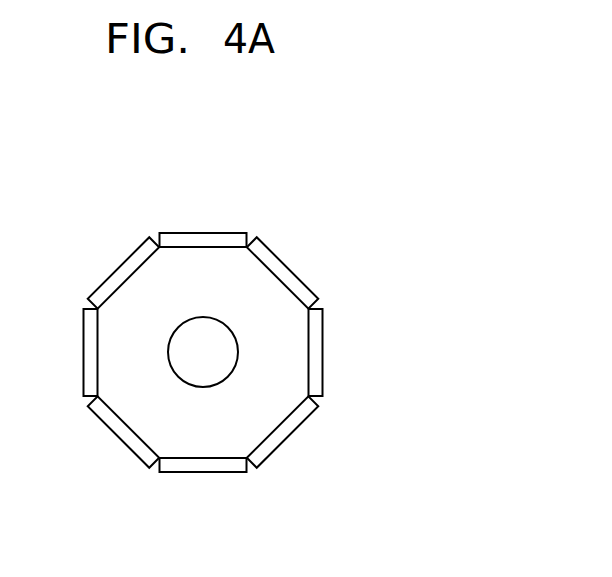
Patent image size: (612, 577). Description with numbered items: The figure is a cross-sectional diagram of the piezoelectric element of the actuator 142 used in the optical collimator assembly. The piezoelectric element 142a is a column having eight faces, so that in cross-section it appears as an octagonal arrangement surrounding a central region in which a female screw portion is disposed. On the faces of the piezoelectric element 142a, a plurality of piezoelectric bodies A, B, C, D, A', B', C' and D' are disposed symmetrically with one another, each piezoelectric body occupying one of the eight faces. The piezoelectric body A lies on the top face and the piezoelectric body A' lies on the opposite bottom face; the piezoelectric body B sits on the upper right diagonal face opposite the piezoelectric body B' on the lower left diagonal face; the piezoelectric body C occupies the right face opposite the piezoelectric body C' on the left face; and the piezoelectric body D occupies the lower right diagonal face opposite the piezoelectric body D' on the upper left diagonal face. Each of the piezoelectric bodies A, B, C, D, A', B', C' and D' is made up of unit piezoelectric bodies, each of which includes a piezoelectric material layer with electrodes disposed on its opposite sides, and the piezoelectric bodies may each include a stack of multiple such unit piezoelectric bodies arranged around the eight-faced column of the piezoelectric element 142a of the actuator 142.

The actuator 142 is at (201, 316).
The piezoelectric element 142a is at (237, 350).
The piezoelectric body A is at (203, 225).
The piezoelectric body B is at (282, 272).
The piezoelectric body C is at (327, 352).
The piezoelectric body D is at (282, 431).
The piezoelectric body A' is at (203, 479).
The piezoelectric body B' is at (123, 431).
The piezoelectric body C' is at (77, 352).
The piezoelectric body D' is at (123, 272).